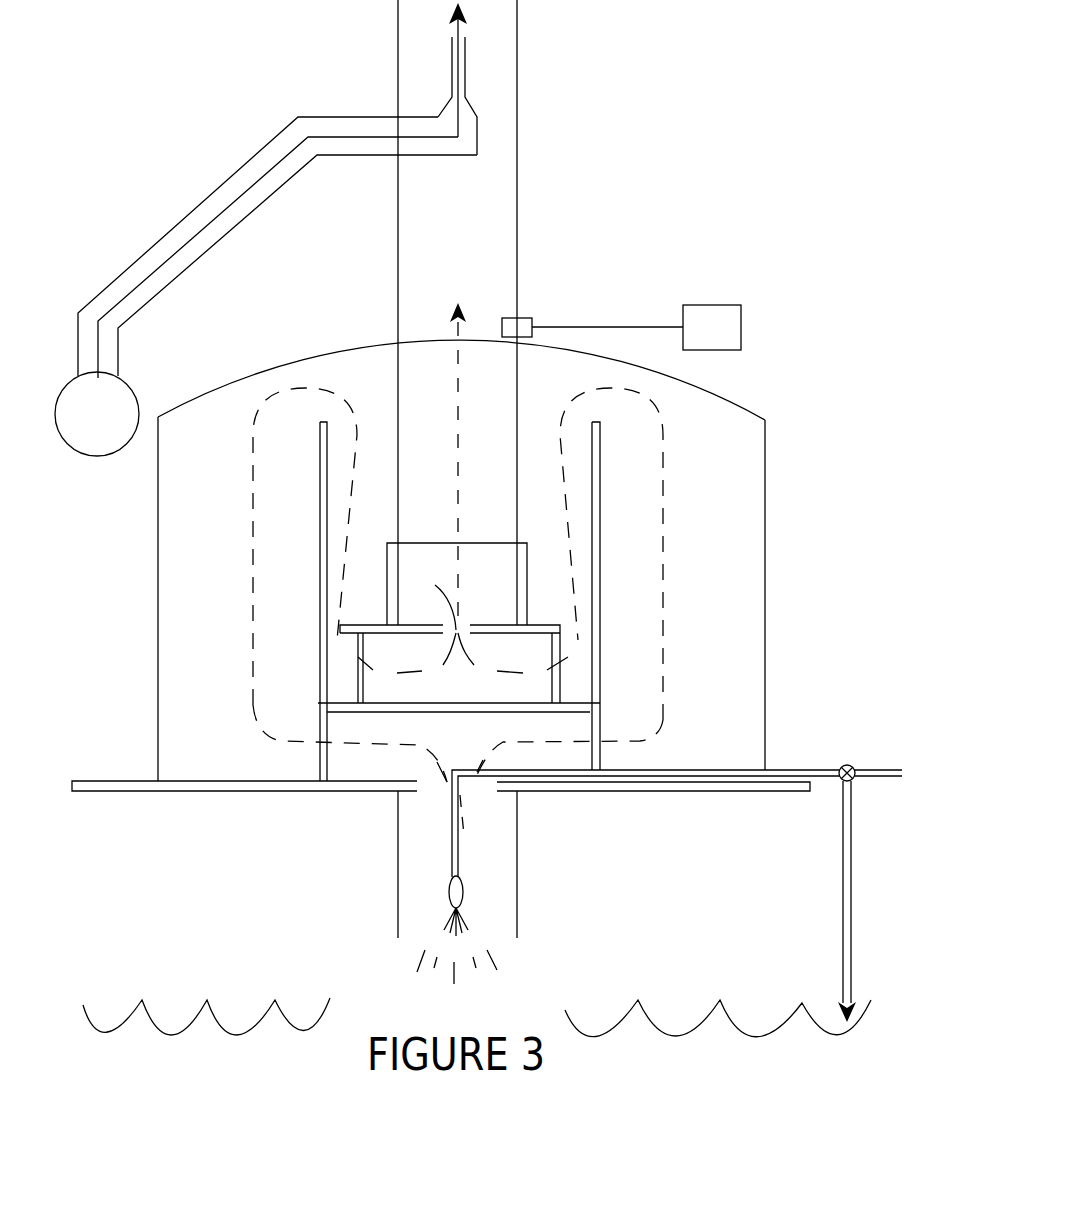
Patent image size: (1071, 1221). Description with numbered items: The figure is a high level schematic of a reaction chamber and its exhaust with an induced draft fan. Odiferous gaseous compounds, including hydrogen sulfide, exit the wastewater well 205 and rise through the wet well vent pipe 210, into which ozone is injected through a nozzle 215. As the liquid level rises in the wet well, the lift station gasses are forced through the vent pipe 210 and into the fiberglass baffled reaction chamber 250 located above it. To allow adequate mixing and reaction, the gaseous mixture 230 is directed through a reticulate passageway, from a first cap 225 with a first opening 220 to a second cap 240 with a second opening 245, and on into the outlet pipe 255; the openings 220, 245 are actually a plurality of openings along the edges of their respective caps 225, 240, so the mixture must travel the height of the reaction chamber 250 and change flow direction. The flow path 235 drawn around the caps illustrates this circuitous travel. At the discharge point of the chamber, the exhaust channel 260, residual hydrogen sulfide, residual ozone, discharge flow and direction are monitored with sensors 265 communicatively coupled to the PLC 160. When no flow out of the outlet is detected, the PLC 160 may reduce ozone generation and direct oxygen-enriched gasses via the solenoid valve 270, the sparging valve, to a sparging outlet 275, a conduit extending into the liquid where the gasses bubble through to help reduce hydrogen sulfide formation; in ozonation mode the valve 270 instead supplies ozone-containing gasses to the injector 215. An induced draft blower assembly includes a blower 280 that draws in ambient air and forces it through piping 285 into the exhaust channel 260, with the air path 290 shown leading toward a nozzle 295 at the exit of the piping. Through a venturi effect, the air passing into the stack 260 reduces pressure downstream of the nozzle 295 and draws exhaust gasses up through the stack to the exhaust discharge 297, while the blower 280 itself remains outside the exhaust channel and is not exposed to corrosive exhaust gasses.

The PLC 160 is at (636, 327).
The wastewater well 205 is at (145, 985).
The wet well vent pipe 210 is at (398, 853).
The nozzle 215 is at (447, 895).
The first opening 220 is at (600, 738).
The first cap 225 is at (600, 713).
The gaseous mixture 230 is at (663, 625).
The left gas flow path 235 is at (253, 633).
The second cap 240 is at (358, 630).
The second opening 245 is at (373, 670).
The reaction chamber 250 is at (158, 562).
The outlet pipe 255 is at (393, 378).
The exhaust channel 260 is at (423, 317).
The sensors 265 is at (528, 316).
The solenoid valve 270 is at (847, 765).
The sparging outlet 275 is at (843, 882).
The blower 280 is at (112, 400).
The piping 285 is at (148, 250).
The return conduit 290 is at (278, 163).
The nozzle 295 is at (477, 110).
The exhaust outlet 297 is at (465, 60).